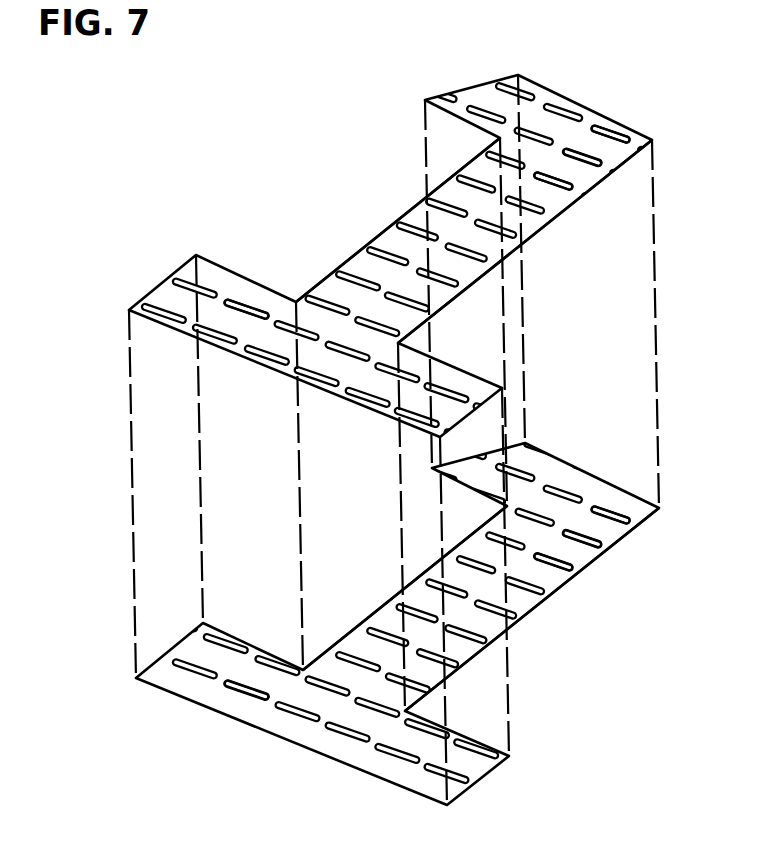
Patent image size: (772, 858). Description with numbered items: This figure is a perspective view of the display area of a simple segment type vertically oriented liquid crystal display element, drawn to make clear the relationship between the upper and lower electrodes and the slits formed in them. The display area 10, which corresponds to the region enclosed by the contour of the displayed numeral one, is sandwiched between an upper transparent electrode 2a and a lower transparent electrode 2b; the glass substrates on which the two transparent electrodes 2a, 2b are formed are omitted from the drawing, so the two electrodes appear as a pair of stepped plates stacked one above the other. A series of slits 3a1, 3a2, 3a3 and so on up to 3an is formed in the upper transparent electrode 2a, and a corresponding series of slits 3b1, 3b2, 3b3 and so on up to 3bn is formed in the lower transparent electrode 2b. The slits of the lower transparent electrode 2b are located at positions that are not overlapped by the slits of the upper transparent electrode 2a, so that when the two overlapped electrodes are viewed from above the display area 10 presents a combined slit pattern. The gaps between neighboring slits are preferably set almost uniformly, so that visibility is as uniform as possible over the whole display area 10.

The display area 10 is at (581, 100).
The upper transparent electrode 2a is at (390, 227).
The lower transparent electrode 2b is at (523, 616).
The slit 3a1 is at (630, 143).
The slit 3a2 is at (600, 166).
The slit 3a3 is at (573, 189).
The slit 3an is at (250, 305).
The slit 3b1 is at (627, 522).
The slit 3b2 is at (600, 544).
The slit 3b3 is at (573, 570).
The slit 3bn is at (232, 701).